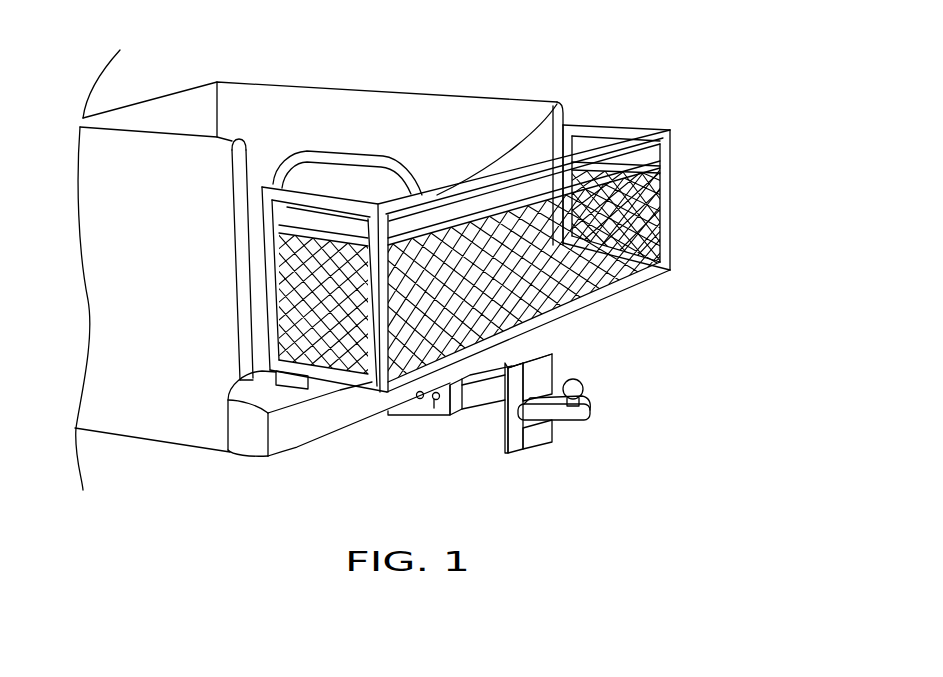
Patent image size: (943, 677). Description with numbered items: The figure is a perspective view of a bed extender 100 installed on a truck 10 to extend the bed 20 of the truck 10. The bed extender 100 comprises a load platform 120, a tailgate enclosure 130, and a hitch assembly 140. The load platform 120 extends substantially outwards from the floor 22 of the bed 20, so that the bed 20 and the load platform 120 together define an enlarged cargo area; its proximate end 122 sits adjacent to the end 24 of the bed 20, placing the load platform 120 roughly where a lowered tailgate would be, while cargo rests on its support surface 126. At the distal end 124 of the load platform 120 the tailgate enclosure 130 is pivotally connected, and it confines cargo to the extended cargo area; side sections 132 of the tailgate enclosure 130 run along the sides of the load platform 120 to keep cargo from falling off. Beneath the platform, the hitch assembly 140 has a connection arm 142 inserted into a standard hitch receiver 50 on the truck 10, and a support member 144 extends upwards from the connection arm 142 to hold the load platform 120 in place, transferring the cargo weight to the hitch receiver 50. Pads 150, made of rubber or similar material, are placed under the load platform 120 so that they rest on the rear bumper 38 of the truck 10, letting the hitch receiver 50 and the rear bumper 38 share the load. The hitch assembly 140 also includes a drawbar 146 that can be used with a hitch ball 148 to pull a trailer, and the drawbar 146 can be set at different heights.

The truck 10 is at (379, 64).
The bed 20 is at (458, 122).
The floor 22 is at (252, 203).
The end 24 is at (515, 212).
The rear bumper 38 is at (287, 433).
The hitch receiver 50 is at (408, 410).
The bed extender 100 is at (690, 110).
The load platform 120 is at (562, 306).
The proximate end 122 is at (561, 108).
The distal end 124 is at (658, 273).
The support surface 126 is at (612, 233).
The tailgate enclosure 130 is at (672, 185).
The side sections 132 is at (378, 288).
The hitch assembly 140 is at (537, 445).
The connection arm 142 is at (480, 402).
The support member 144 is at (540, 373).
The drawbar 146 is at (590, 414).
The hitch ball 148 is at (584, 390).
The pads 150 is at (295, 387).